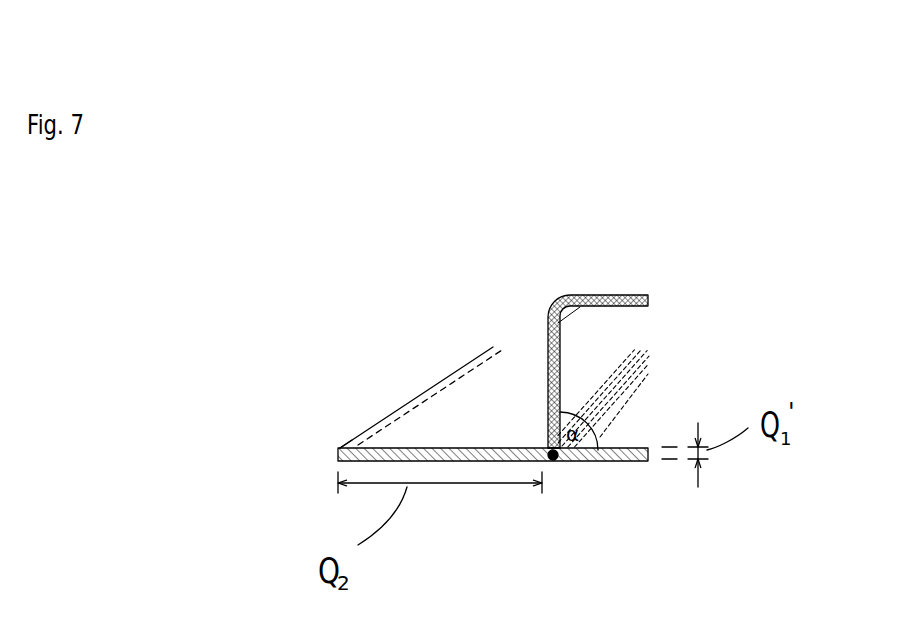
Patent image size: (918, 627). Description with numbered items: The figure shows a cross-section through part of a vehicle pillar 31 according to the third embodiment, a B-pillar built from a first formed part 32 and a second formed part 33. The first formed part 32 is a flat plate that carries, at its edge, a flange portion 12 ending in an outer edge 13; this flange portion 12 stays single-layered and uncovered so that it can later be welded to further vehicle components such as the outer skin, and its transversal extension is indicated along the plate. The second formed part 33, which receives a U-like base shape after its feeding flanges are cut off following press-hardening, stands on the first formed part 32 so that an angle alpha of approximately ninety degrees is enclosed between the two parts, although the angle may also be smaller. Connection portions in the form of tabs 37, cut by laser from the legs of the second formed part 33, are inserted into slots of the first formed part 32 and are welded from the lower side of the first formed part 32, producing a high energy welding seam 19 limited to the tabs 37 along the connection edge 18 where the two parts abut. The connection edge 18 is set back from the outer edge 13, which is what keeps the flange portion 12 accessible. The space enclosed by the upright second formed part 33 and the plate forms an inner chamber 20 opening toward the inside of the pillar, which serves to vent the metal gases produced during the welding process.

The flange portion 12 is at (483, 385).
The outer edge 13 is at (355, 433).
The connection edge 18 is at (550, 456).
The high energy welding seam 19 is at (551, 462).
The inner chamber 20 is at (637, 417).
The vehicle pillar 31 is at (367, 183).
The first formed part 32 is at (635, 455).
The second formed part 33 is at (620, 297).
The tab 37 is at (630, 393).